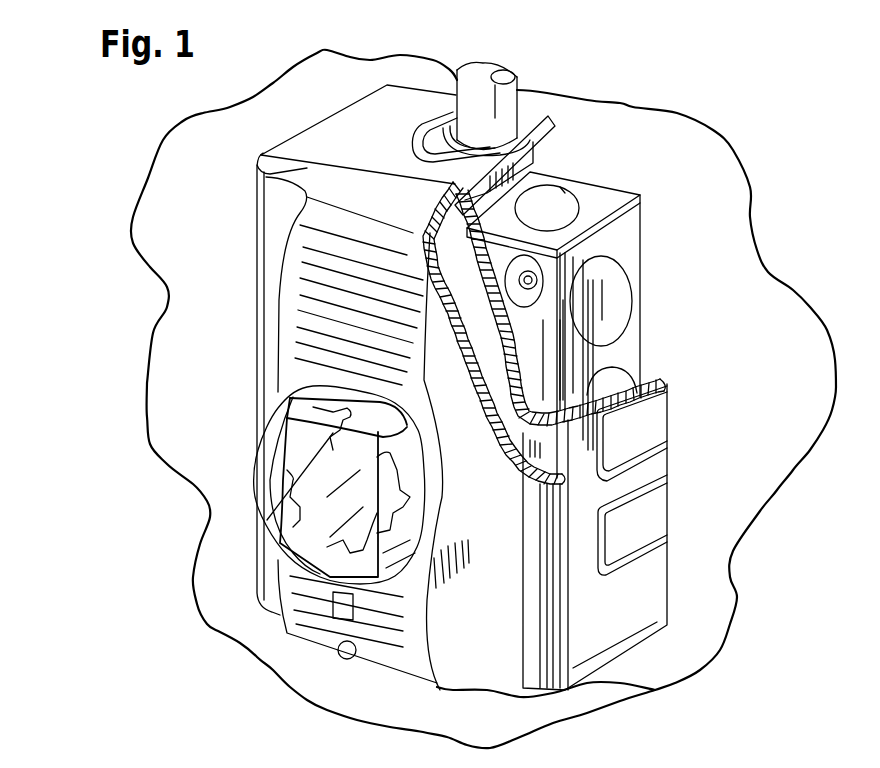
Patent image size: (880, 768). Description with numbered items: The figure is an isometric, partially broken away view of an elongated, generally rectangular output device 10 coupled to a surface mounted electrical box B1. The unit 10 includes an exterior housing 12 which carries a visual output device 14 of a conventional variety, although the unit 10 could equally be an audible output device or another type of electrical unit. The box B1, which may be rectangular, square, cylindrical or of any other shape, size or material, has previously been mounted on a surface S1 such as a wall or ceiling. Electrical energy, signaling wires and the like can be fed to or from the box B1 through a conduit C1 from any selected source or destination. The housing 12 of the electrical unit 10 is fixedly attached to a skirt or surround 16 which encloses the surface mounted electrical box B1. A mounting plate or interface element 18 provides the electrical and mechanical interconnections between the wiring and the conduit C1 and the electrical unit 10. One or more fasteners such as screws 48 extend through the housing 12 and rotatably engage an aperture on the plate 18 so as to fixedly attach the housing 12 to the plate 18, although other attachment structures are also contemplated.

The output device 10 is at (136, 553).
The exterior housing 12 is at (322, 393).
The visual output device 14 is at (213, 425).
The skirt or surround 16 is at (658, 570).
The mounting plate or interface element 18 is at (503, 425).
The screws 48 is at (345, 660).
The conduit C1 is at (480, 70).
The surface mounted electrical box B1 is at (607, 192).
The surface S1 is at (760, 353).